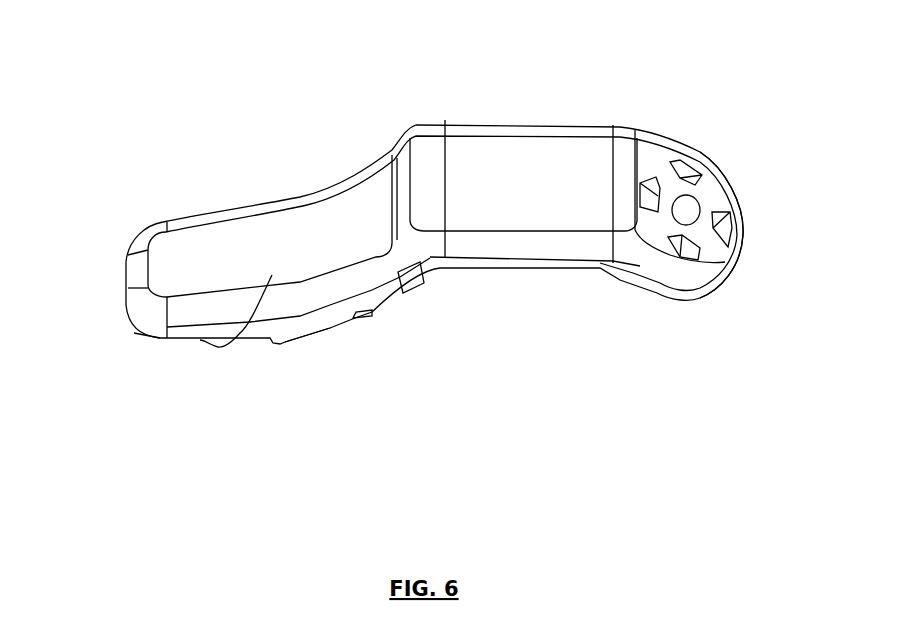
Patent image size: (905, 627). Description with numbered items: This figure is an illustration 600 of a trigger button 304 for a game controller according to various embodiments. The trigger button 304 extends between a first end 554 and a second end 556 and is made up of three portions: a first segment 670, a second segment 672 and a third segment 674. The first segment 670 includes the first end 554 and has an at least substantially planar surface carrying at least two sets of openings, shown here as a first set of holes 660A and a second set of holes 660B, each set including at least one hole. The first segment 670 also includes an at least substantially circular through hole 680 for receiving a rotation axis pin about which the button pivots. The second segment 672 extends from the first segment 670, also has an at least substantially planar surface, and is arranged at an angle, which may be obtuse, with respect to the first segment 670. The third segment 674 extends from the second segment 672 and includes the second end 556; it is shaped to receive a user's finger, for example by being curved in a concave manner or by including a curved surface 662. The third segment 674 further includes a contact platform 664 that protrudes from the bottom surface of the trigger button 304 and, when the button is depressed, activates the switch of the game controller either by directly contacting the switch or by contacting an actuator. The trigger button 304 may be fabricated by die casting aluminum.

The trigger button 304 is at (374, 84).
The illustration 600 is at (434, 234).
The first end 554 is at (740, 257).
The second end 556 is at (136, 258).
The first set of holes 660A is at (657, 190).
The second set of holes 660B is at (690, 170).
The curved surface 662 is at (183, 338).
The contact platform 664 is at (317, 338).
The first segment 670 is at (740, 385).
The second segment 672 is at (437, 337).
The third segment 674 is at (142, 490).
The substantially circular through hole 680 is at (688, 212).